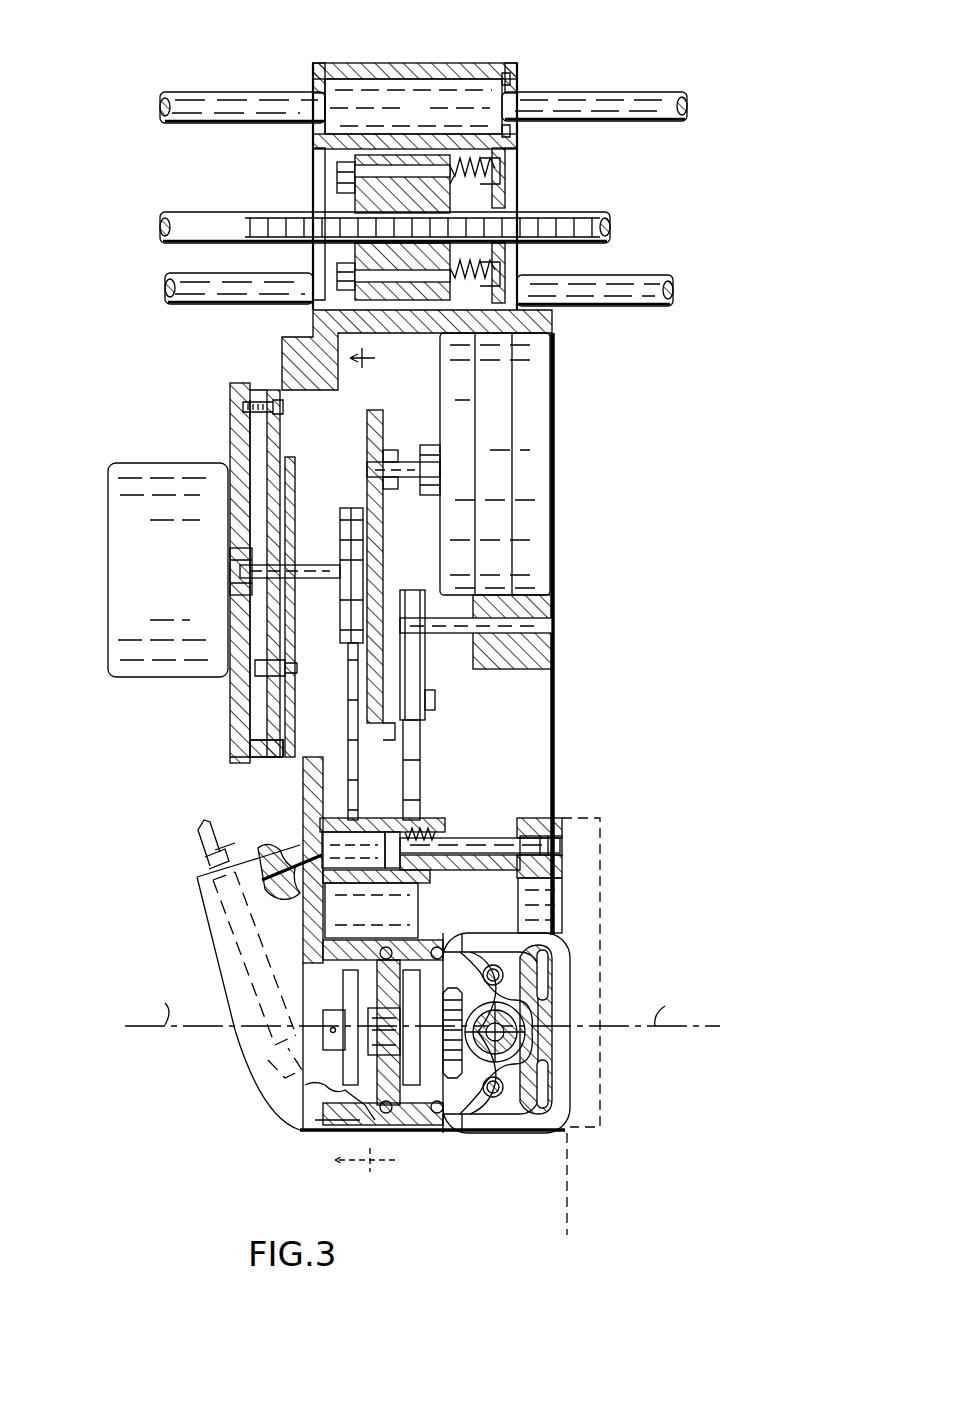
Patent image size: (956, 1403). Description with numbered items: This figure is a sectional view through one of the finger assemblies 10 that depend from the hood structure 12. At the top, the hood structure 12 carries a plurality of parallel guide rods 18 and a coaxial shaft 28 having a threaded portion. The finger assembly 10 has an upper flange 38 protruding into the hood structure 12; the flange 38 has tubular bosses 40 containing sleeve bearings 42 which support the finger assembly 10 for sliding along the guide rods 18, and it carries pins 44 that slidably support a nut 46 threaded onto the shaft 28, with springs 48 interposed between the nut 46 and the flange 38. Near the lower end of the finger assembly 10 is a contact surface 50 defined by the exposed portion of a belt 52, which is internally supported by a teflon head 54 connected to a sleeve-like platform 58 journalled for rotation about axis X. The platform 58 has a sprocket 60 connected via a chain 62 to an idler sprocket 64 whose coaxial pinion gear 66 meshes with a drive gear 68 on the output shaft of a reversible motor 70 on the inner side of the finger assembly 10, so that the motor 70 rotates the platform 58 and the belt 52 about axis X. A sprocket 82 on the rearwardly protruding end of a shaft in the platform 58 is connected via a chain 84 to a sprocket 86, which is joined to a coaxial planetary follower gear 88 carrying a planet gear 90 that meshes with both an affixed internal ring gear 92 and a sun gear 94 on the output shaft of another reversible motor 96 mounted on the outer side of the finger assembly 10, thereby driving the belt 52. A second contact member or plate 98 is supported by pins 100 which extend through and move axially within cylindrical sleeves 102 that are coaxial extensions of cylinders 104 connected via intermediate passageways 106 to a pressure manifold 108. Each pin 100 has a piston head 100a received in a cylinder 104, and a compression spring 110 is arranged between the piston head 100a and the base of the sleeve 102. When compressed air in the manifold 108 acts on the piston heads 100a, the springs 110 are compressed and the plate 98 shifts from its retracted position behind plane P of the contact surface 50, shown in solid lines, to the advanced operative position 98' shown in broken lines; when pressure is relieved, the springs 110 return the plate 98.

The finger assembly 10 is at (594, 468).
The hood structure 12 is at (551, 60).
The guide rods 18 is at (605, 98).
The coaxial shafts 28 is at (190, 213).
The upper flange 38 is at (505, 194).
The tubular bosses 40 is at (436, 70).
The sleeve bearings 42 is at (468, 98).
The pins 44 is at (338, 176).
The nut 46 is at (365, 203).
The springs 48 is at (490, 163).
The contact surface 50 is at (570, 983).
The belt 52 is at (548, 1128).
The teflon head 54 is at (512, 1123).
The platform 58 is at (490, 938).
The sprocket 60 is at (418, 1110).
The chain 62 is at (415, 746).
The idler sprocket 64 is at (425, 665).
The pinion gear 66 is at (372, 558).
The drive gear 68 is at (384, 438).
The reversible motor 70 is at (555, 428).
The sprocket 82 is at (350, 1055).
The chain 84 is at (350, 681).
The sprocket 86 is at (345, 513).
The planetary follower gear 88 is at (294, 460).
The planet gear 90 is at (265, 710).
The internal ring gear 92 is at (282, 408).
The sun gear 94 is at (230, 610).
The reversible motor 96 is at (122, 518).
The plate 98 is at (556, 845).
The advanced operative position of plate 98' is at (612, 1015).
The pins 100 is at (450, 818).
The piston head 100a is at (400, 836).
The cylindrical sleeves 102 is at (505, 828).
The cylinders 104 is at (393, 834).
The intermediate passageways 106 is at (290, 856).
The pressure manifold 108 is at (235, 950).
The compression spring 110 is at (415, 828).